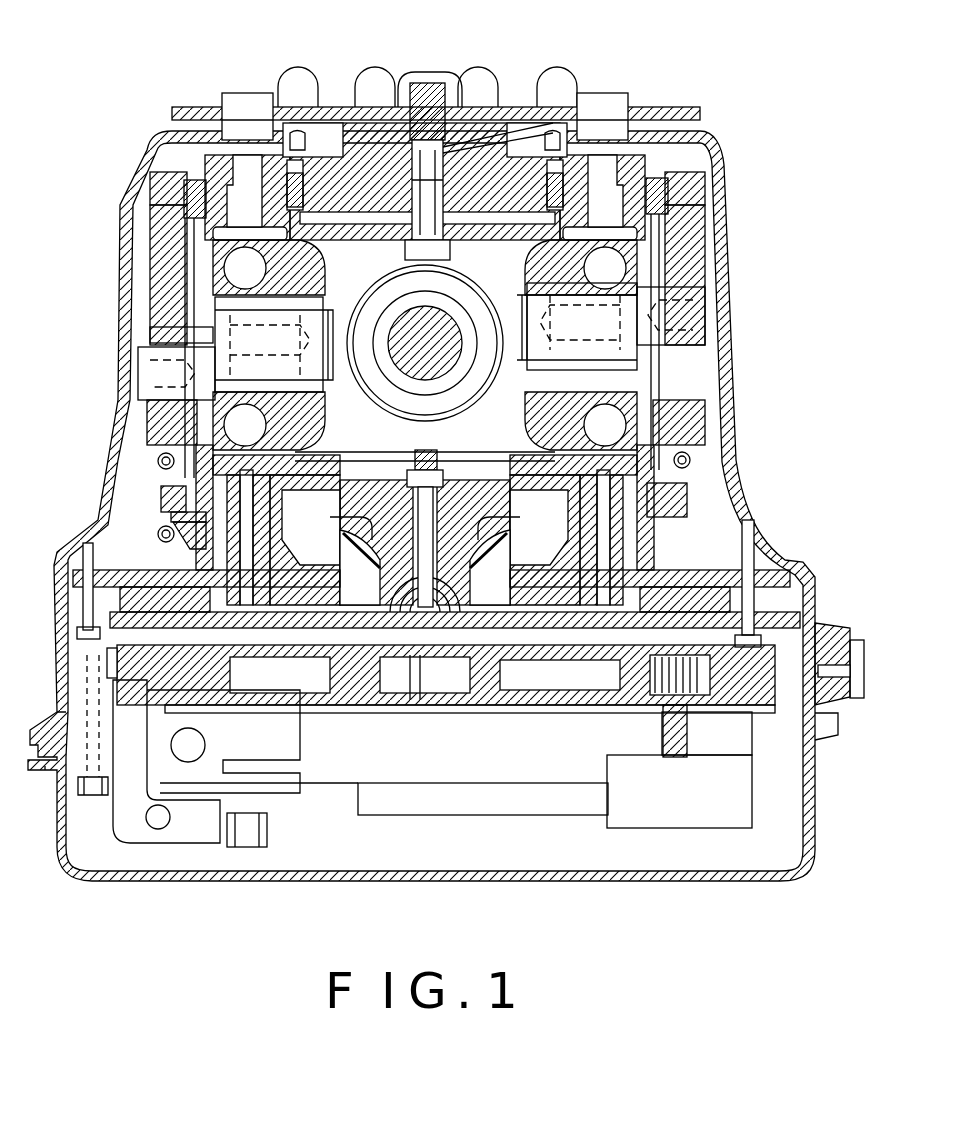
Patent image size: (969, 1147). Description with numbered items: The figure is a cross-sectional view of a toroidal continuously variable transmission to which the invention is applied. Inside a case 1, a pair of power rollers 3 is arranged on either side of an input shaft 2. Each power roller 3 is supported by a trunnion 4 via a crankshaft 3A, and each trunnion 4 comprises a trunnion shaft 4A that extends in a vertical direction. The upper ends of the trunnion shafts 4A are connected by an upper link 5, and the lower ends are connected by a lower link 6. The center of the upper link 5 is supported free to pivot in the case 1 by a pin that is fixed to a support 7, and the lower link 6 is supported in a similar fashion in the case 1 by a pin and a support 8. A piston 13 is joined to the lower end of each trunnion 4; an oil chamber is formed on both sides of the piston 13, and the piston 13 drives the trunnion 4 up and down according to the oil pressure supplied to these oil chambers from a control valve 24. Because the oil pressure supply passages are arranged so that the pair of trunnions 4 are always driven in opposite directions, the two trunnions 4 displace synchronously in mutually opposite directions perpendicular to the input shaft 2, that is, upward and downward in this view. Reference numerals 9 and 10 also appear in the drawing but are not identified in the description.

The case 1 is at (737, 385).
The input shaft 2 is at (440, 365).
The power roller 3 is at (300, 272).
The crankshaft 3A is at (158, 350).
The trunnion 4 is at (150, 272).
The trunnion shaft 4A is at (255, 175).
The upper link 5 is at (163, 183).
The lower link 6 is at (160, 500).
The support 7 is at (455, 160).
The support 8 is at (408, 500).
The sleeve 9 is at (193, 180).
The tie rod 10 is at (197, 180).
The piston 13 is at (85, 590).
The control valve 24 is at (345, 700).